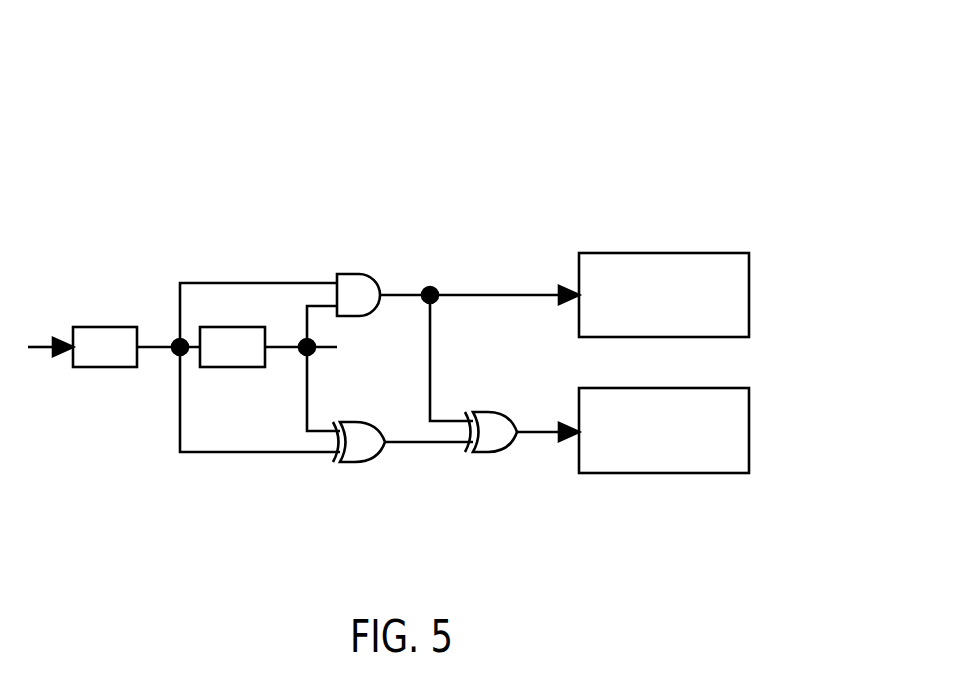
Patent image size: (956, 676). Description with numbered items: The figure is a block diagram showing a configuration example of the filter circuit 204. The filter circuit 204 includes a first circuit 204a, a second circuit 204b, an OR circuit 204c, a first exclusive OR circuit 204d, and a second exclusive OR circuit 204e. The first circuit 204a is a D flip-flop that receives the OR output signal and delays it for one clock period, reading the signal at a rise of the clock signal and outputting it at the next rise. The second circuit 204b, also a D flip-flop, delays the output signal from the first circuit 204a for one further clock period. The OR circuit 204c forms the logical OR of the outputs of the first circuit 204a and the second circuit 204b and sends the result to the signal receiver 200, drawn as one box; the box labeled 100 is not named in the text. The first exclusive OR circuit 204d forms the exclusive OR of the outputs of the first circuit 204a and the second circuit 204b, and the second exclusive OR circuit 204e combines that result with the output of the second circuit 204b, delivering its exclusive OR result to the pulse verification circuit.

The filter circuit 204 is at (379, 114).
The first circuit 204a is at (106, 327).
The second circuit 204b is at (233, 327).
The OR circuit 204c is at (353, 274).
The first exclusive OR circuit 204d is at (350, 465).
The second exclusive OR circuit 204e is at (483, 455).
The signal receiver 100 is at (749, 290).
The signal receiver 200 is at (749, 430).